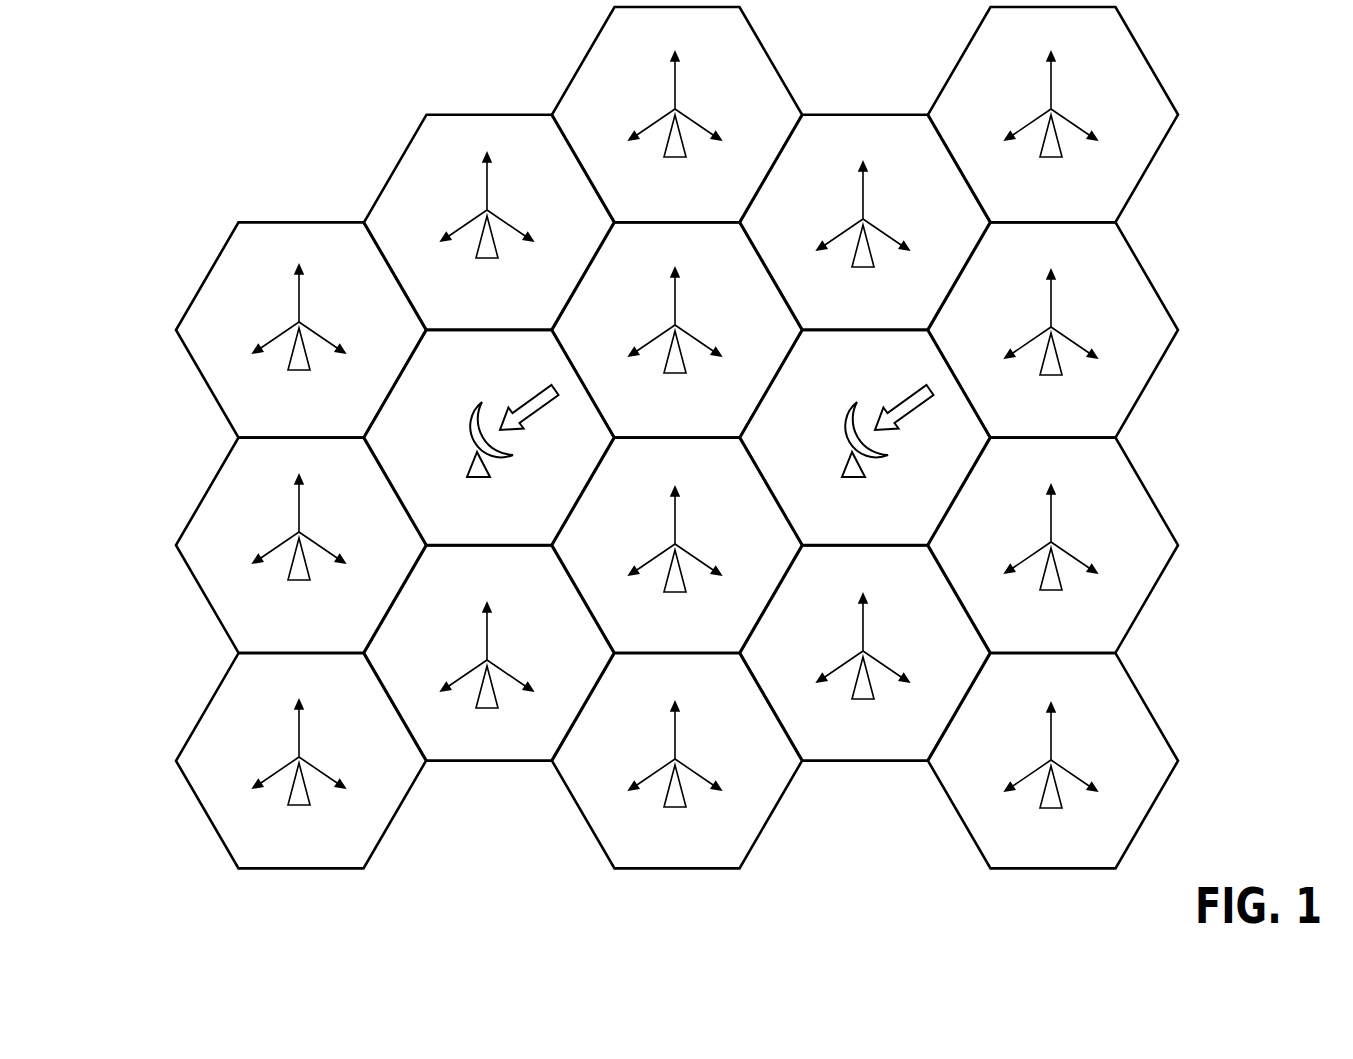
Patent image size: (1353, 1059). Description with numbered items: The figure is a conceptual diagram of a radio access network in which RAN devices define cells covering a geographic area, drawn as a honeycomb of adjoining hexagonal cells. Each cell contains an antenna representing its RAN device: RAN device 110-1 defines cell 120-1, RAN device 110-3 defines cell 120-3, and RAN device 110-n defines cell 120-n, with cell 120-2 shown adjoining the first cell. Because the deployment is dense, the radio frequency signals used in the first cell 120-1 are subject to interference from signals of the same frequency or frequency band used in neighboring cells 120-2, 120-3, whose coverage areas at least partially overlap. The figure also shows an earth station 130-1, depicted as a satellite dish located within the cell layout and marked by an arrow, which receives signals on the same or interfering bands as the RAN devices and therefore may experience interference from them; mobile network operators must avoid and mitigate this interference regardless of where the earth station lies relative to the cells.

The cell 120-1 is at (209, 277).
The cell 120-2 is at (398, 167).
The cell 120-3 is at (209, 491).
The cell 120-n is at (1145, 490).
The RAN device 110-1 is at (291, 370).
The RAN device 110-3 is at (289, 580).
The RAN device 110-n is at (1062, 590).
The earth station 130-1 is at (467, 442).